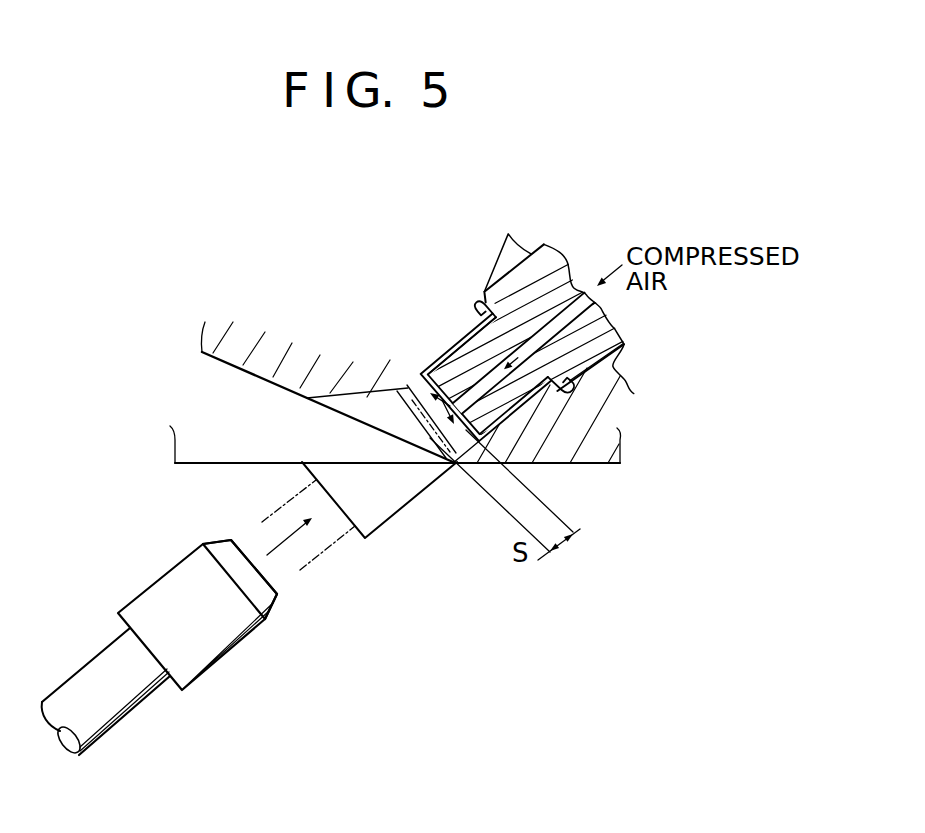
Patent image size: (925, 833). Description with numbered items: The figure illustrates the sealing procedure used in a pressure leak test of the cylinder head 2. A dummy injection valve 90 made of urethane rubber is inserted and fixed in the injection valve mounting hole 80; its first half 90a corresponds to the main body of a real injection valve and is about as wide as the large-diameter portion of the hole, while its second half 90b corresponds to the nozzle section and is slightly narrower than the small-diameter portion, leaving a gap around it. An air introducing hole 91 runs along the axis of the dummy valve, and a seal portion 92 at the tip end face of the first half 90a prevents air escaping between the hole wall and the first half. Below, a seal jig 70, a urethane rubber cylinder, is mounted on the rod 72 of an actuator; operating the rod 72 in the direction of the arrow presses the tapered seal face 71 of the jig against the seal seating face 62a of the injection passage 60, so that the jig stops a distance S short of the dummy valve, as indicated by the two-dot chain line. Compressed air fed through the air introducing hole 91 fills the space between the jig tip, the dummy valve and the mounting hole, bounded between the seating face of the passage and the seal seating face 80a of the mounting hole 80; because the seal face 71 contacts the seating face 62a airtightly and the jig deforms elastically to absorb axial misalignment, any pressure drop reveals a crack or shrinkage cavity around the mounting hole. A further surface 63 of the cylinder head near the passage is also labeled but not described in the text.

The cylinder head 2 is at (311, 307).
The injection passage 60 is at (352, 403).
The seal seating face 62a is at (407, 385).
The bevel surface 63 is at (378, 428).
The seal jig 70 is at (388, 521).
The seal face 71 is at (278, 598).
The rod 72 is at (140, 694).
The injection valve mounting hole 80 is at (445, 368).
The seal seating face of the injection valve mounting hole 80a is at (478, 304).
The dummy injection valve 90 is at (638, 330).
The first half 90a is at (550, 270).
The second half 90b is at (450, 357).
The air introducing hole 91 is at (494, 367).
The seal portion 92 is at (569, 372).